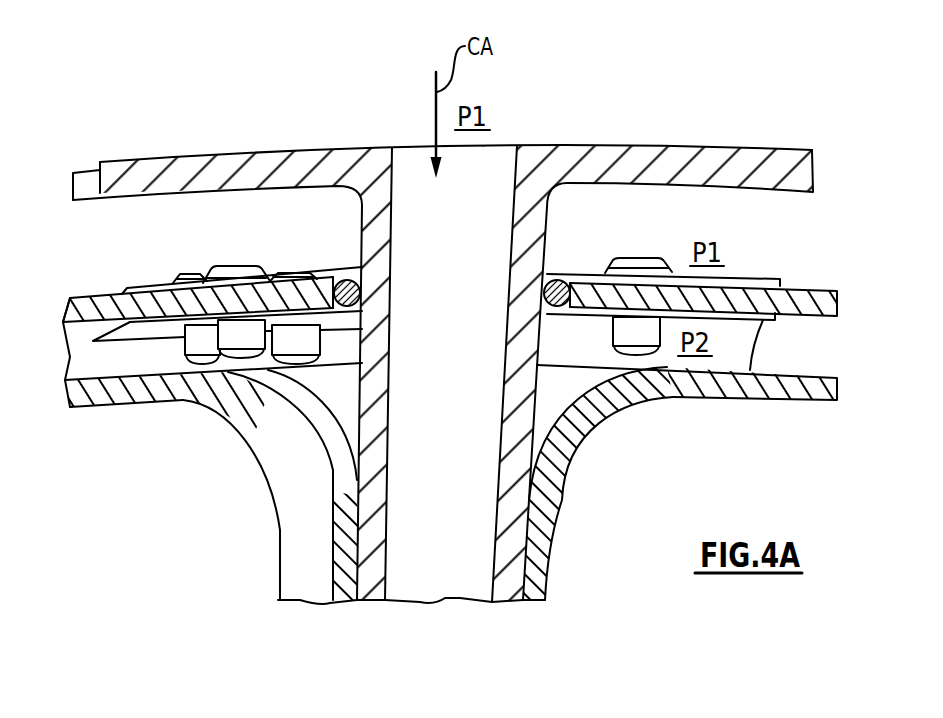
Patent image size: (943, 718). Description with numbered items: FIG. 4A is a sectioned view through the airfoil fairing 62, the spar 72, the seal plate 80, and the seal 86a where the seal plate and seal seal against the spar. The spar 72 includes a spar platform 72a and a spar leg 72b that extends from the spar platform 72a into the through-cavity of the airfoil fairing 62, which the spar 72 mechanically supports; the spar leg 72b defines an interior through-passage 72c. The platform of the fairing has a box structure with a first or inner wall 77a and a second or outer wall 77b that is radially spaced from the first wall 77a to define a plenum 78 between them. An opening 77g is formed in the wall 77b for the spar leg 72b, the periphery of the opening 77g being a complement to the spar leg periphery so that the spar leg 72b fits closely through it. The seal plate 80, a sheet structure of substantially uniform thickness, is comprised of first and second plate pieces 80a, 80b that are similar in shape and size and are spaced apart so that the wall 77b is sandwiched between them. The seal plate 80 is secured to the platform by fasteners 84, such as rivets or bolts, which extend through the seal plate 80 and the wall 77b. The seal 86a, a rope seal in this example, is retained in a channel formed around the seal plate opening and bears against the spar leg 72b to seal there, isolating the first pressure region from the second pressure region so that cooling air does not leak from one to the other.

The spar 72 is at (815, 138).
The spar platform 72a is at (175, 168).
The spar leg 72b is at (513, 553).
The interior through-passage 72c is at (472, 323).
The airfoil fairing 62 is at (570, 498).
The first wall 77a is at (775, 388).
The second wall 77b is at (815, 291).
The opening 77g is at (580, 283).
The plenum 78 is at (788, 357).
The seal plate 80 is at (746, 262).
The first plate piece 80a is at (776, 280).
The second plate piece 80b is at (770, 320).
The fastener 84 is at (658, 258).
The seal 86a is at (558, 277).